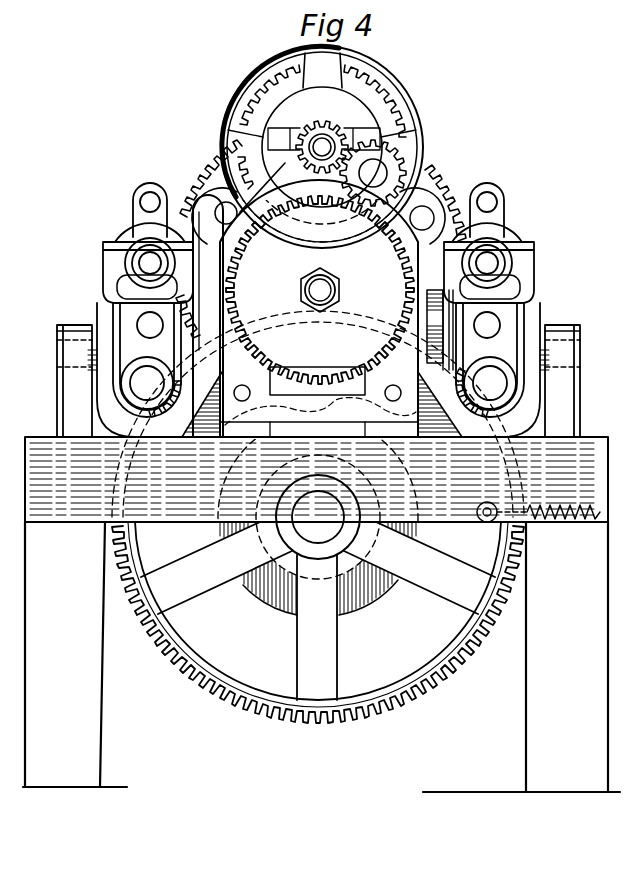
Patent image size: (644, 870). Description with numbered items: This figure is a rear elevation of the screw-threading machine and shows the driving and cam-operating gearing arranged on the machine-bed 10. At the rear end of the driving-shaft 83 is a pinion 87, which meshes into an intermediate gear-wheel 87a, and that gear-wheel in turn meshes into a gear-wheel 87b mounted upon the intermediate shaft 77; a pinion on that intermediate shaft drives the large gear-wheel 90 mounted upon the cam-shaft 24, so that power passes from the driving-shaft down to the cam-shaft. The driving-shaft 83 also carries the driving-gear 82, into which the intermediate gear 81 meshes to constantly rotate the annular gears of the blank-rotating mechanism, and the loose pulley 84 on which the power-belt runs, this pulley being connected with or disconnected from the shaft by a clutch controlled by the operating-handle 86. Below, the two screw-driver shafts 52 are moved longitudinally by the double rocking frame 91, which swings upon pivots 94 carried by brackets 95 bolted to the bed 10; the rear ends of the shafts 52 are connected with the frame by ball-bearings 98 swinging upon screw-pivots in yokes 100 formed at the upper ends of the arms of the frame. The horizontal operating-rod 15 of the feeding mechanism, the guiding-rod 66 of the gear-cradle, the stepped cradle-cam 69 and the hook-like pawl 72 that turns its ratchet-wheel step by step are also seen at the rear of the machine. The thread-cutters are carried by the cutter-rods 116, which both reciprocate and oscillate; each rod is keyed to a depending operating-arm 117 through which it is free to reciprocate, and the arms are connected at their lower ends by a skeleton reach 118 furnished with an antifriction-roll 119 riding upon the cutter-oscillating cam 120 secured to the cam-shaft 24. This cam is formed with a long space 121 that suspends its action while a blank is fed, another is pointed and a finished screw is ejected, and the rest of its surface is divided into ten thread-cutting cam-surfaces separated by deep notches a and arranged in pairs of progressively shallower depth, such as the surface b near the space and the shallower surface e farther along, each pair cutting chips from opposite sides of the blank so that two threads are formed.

The driving-gear 82 is at (262, 103).
The pinion 87 is at (309, 126).
The driving-shaft 83 is at (323, 144).
The loose pulley 84 is at (414, 116).
The intermediate gear-wheel 87a is at (402, 162).
The intermediate gear 81 is at (447, 187).
The horizontal operating-rod 15 is at (318, 210).
The operating-handle 86 is at (208, 316).
The gear-wheel 87b is at (363, 275).
The screw-driver shaft 52 is at (139, 266).
The ball-bearings 98 is at (122, 281).
The yokes 100 is at (318, 289).
The guiding-rod 66 is at (318, 325).
The stepped cradle-cam 69 is at (318, 360).
The pawl 72 is at (440, 330).
The pivots 94 is at (72, 366).
The brackets 95 is at (318, 381).
The cutter-rods 116 is at (318, 383).
The double rocking frame 91 is at (336, 397).
The bed 10 is at (321, 614).
The operating-arm 117 is at (128, 487).
The cam-shaft 24 is at (318, 517).
The antifriction-roll 119 is at (171, 548).
The deep notches a is at (451, 561).
The reach 118 is at (250, 598).
The cutter-oscillating cam 120 is at (262, 606).
The long space 121 is at (287, 632).
The cam-surface b is at (375, 612).
The large gear-wheel 90 is at (318, 517).
The cam-surface e is at (542, 512).
The intermediate shaft 77 is at (336, 291).